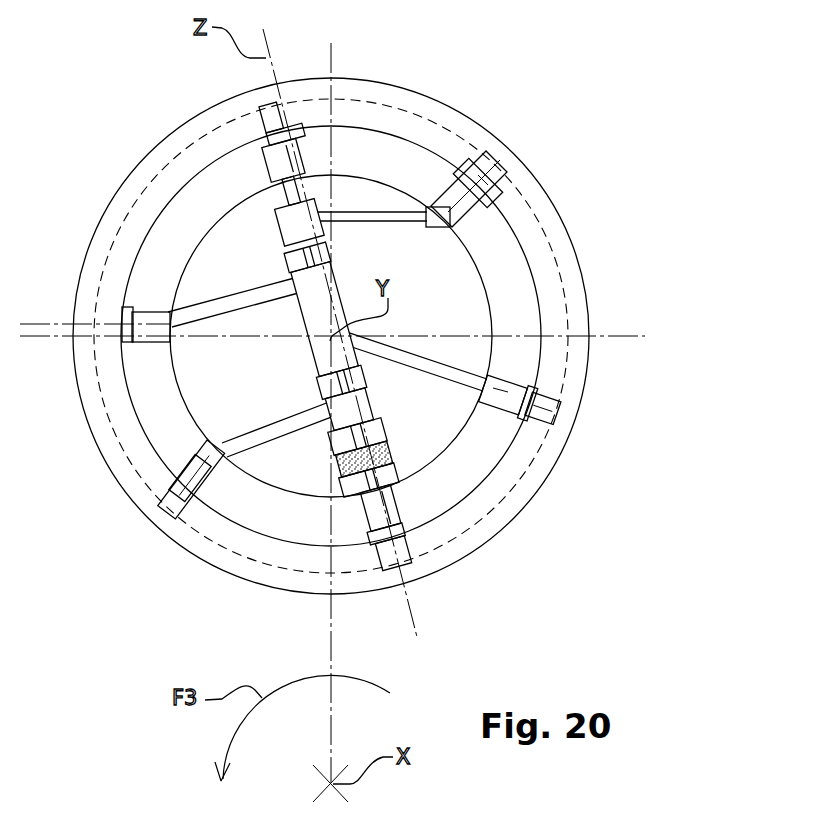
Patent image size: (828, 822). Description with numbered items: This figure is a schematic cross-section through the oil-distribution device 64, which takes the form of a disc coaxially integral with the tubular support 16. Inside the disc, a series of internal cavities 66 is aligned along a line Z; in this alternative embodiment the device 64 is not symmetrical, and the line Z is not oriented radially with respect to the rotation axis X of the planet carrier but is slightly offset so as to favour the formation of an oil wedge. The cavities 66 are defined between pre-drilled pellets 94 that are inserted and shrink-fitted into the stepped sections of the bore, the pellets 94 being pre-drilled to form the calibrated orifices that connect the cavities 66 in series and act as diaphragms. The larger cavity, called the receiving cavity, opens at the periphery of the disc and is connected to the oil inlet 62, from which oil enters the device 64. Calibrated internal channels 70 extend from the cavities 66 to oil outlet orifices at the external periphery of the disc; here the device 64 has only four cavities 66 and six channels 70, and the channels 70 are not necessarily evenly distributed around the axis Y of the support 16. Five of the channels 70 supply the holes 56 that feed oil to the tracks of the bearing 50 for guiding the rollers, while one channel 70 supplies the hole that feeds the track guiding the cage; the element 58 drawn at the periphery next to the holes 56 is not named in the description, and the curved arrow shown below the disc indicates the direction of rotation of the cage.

The bearing 50 is at (533, 187).
The support 16 is at (493, 247).
The device 64 is at (505, 305).
The internal cavities 66 is at (307, 278).
The oil inlet 62 is at (390, 468).
The calibrated internal channels 70 is at (351, 212).
The holes 56 is at (440, 207).
The clip 58 is at (478, 170).
The pre-drilled pellets 94 is at (377, 428).